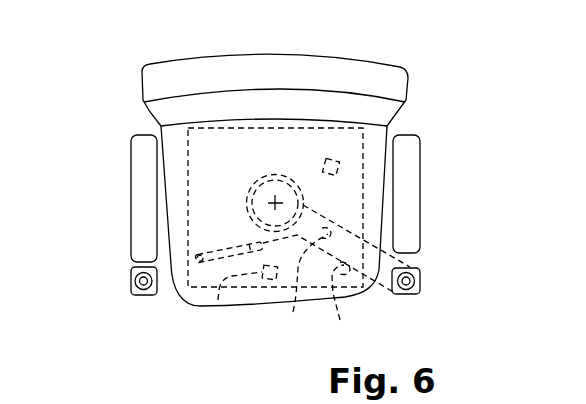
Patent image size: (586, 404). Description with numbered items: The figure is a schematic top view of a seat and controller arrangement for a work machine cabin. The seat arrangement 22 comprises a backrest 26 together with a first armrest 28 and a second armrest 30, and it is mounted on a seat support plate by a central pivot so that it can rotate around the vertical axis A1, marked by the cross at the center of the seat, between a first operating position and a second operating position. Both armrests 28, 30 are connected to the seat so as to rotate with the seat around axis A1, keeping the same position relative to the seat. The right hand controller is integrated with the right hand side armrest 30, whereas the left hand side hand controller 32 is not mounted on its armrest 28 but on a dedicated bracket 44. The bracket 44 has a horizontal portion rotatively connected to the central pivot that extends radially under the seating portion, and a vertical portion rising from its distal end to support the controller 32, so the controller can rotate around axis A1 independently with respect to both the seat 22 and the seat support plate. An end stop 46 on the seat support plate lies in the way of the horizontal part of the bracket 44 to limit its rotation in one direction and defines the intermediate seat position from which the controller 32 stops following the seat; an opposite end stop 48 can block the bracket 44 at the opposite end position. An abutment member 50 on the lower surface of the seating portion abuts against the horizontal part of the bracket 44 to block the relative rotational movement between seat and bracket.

The seat arrangement 22 is at (441, 87).
The backrest 26 is at (215, 105).
The first armrest 28 is at (408, 192).
The second armrest 30 is at (141, 191).
The hand controller 32 is at (130, 282).
The bracket 44 is at (293, 312).
The end stop 46 is at (218, 300).
The opposite end stop 48 is at (330, 158).
The abutment member 50 is at (340, 320).
The vertical axis A1 is at (275, 203).